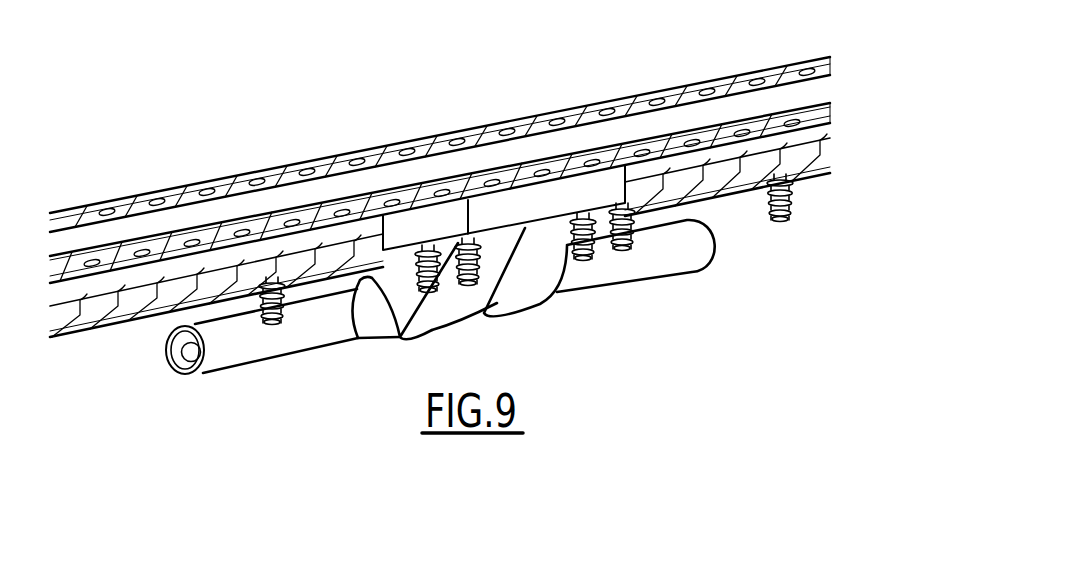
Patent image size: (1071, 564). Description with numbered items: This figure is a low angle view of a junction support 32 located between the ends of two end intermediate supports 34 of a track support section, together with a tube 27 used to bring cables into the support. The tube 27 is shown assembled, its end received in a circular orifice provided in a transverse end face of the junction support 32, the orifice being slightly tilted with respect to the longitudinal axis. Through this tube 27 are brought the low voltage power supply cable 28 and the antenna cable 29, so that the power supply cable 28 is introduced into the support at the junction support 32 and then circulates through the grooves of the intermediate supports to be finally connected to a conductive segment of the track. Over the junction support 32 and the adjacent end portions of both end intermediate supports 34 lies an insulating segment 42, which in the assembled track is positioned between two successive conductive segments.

The tube 27 is at (247, 352).
The low voltage power supply cable 28 is at (190, 362).
The antenna cable 29 is at (167, 361).
The junction support 32 is at (524, 276).
The end intermediate support 34 is at (211, 184).
The insulating segment 42 is at (128, 236).